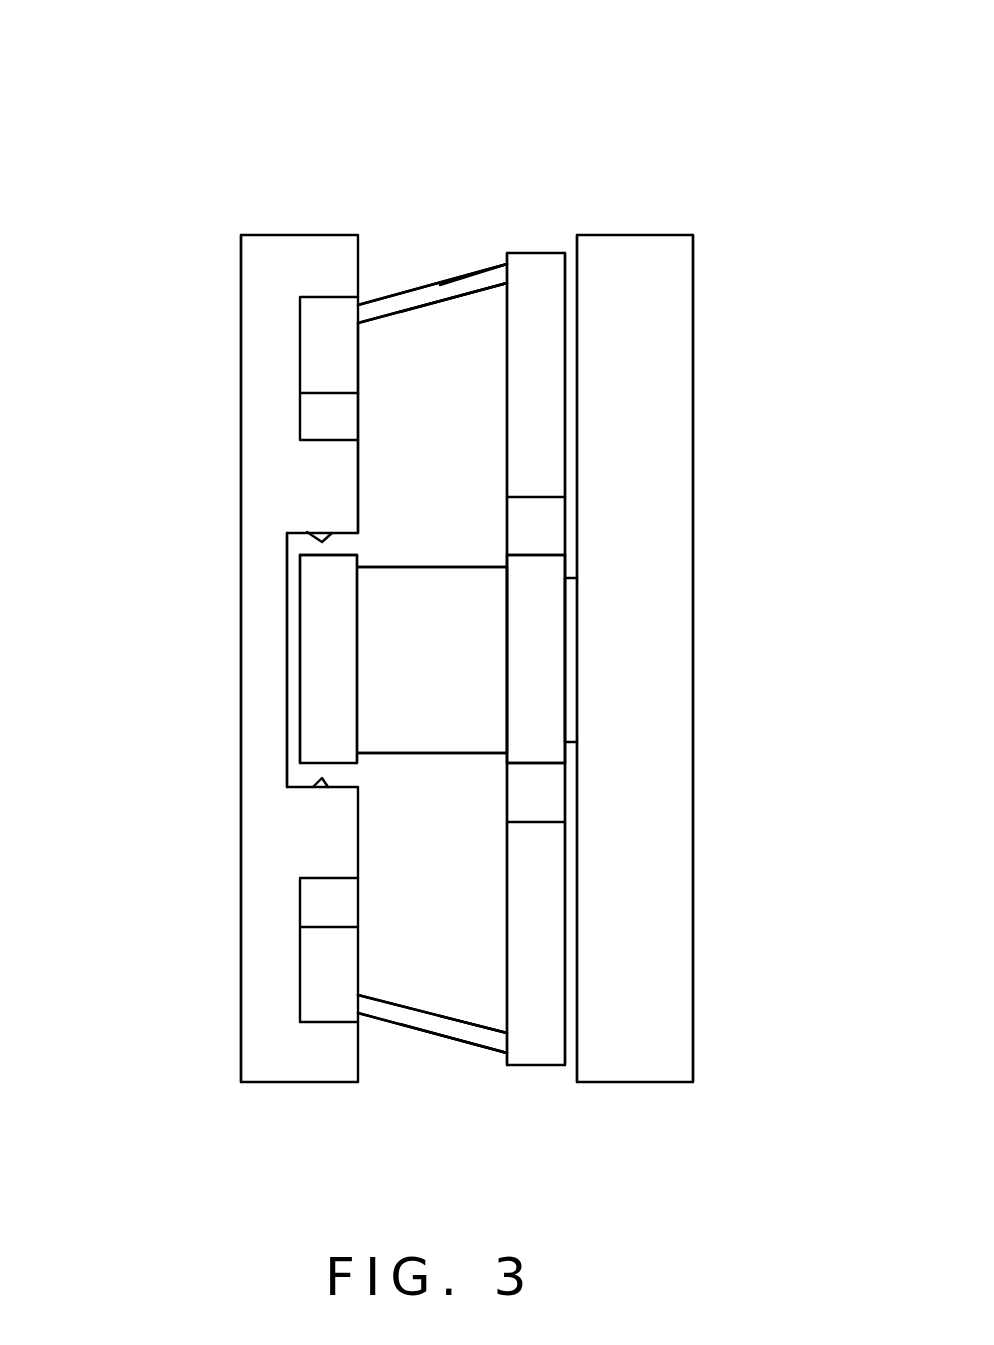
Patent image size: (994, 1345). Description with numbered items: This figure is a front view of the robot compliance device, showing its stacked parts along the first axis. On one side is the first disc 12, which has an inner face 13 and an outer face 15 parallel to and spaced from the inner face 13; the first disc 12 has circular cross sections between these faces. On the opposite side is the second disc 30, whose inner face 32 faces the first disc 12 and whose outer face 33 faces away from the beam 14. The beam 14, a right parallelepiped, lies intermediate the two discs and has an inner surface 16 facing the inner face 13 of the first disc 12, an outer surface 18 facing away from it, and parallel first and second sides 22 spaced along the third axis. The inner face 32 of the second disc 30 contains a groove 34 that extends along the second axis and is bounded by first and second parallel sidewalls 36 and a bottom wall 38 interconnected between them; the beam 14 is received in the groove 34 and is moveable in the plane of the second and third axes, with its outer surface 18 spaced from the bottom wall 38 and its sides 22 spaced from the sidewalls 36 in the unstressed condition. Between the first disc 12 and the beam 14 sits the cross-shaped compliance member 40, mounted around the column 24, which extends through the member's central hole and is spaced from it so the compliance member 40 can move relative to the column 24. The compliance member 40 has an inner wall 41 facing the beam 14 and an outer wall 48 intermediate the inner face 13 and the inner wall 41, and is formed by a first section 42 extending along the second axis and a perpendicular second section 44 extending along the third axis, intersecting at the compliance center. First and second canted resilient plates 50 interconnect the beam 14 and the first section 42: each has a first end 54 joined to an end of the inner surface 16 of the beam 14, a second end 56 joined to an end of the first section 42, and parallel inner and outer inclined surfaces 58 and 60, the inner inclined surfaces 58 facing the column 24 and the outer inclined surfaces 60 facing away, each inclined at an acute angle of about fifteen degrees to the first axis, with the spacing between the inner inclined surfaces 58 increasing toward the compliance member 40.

The first disc 12 is at (653, 647).
The inner face 13 is at (577, 262).
The beam 14 is at (320, 708).
The outer face 15 is at (693, 323).
The inner surface 16 is at (362, 650).
The outer surface 18 is at (298, 615).
The first and second sides 22 is at (347, 555).
The column 24 is at (460, 727).
The second disc 30 is at (252, 338).
The inner face 32 is at (358, 485).
The outer face 33 is at (240, 405).
The groove 34 is at (298, 567).
The first and second sidewalls 36 is at (322, 542).
The bottom wall 38 is at (287, 643).
The compliance member 40 is at (540, 597).
The inner wall 41 is at (507, 376).
The first section 42 is at (543, 265).
The second section 44 is at (542, 716).
The outer wall 48 is at (565, 438).
The first and second canted resilient plates 50 is at (412, 293).
The first end 54 is at (375, 307).
The second end 56 is at (487, 275).
The inner inclined surface 58 is at (435, 305).
The outer inclined surface 60 is at (448, 275).